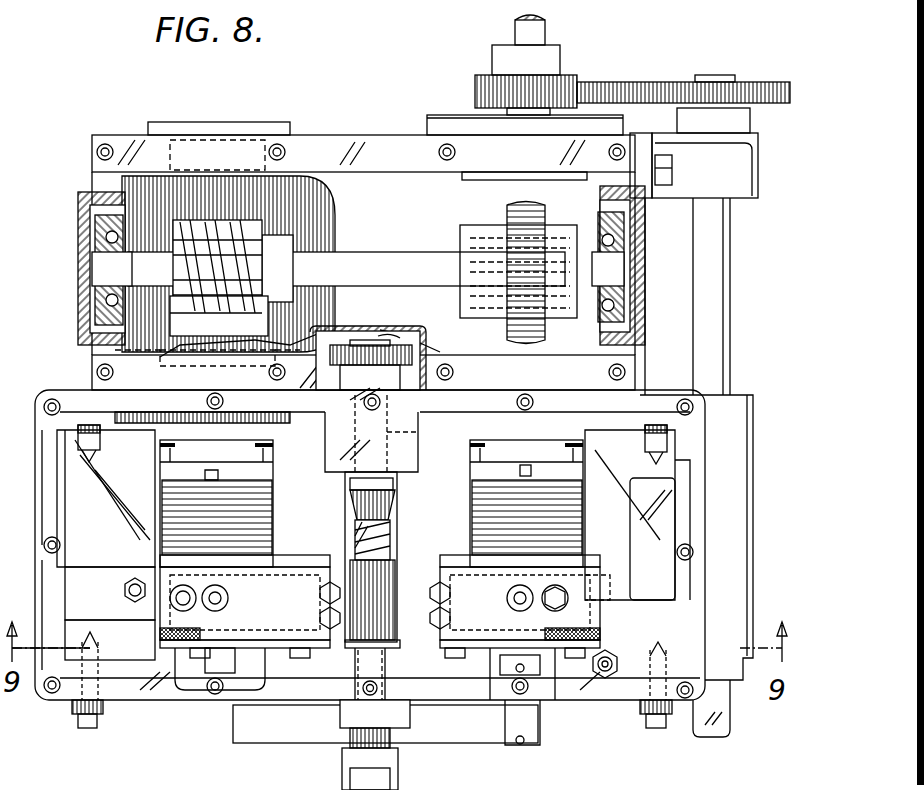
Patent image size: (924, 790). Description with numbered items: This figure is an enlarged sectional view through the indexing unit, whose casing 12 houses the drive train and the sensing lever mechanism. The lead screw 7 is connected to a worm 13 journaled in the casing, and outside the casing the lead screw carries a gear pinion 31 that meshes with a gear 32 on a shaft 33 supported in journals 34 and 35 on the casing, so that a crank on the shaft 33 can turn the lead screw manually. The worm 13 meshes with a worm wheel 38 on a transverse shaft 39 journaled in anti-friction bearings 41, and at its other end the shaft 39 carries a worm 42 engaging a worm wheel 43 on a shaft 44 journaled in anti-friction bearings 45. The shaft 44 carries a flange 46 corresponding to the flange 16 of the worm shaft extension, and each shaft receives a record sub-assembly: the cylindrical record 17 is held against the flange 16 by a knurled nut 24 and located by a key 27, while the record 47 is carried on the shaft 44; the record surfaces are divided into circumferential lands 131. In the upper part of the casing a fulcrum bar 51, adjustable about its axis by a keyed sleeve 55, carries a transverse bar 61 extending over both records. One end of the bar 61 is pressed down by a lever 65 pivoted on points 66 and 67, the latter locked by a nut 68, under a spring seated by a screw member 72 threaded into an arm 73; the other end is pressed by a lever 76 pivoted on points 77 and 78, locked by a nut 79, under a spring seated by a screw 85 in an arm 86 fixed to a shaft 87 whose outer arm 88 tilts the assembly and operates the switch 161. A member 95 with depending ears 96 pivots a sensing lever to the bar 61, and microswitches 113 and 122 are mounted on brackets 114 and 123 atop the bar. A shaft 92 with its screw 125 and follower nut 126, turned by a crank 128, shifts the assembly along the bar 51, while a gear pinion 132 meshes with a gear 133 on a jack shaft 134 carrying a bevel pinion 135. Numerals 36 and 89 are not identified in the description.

The lead screw 7 is at (514, 28).
The casing 12 is at (335, 138).
The worm 13 is at (572, 245).
The flange 16 is at (548, 470).
The cylindrical record 17 is at (490, 508).
The nut 24 is at (165, 632).
The key 27 is at (525, 464).
The gear pinion 31 is at (482, 86).
The gear 32 is at (628, 90).
The shaft 33 is at (722, 301).
The journal 34 is at (748, 160).
The journal 35 is at (745, 482).
The frame hook 36 is at (720, 722).
The worm wheel 38 is at (507, 212).
The transverse shaft 39 is at (372, 258).
The anti-friction bearings 41 is at (80, 240).
The worm 42 is at (228, 308).
The worm wheel 43 is at (262, 303).
The shaft 44 is at (232, 211).
The anti-friction bearings 45 is at (250, 138).
The flange 46 is at (262, 462).
The record 47 is at (255, 510).
The bar 51 is at (392, 508).
The sleeve 55 is at (338, 714).
The transverse bar 61 is at (612, 578).
The lever 65 is at (70, 493).
The point 66 is at (85, 437).
The point 67 is at (100, 662).
The nut 68 is at (72, 712).
The member 72 is at (132, 580).
The arm 73 is at (100, 610).
The lever 76 is at (614, 550).
The point 77 is at (655, 455).
The point 78 is at (668, 650).
The nut 79 is at (664, 720).
The screw 85 is at (608, 680).
The arm 86 is at (573, 672).
The shaft 87 is at (503, 718).
The arm 88 is at (458, 745).
The splined sleeve 89 is at (355, 752).
The shaft 92 is at (362, 681).
The member 95 is at (430, 634).
The depending ears 96 is at (312, 632).
The microswitch 113 is at (275, 603).
The bracket 114 is at (255, 566).
The microswitch 122 is at (455, 612).
The bracket 123 is at (482, 566).
The screw 125 is at (390, 525).
The follower nut 126 is at (376, 632).
The crank 128 is at (385, 775).
The circumferential lands 131 is at (172, 505).
The gear pinion 132 is at (400, 345).
The gear 133 is at (348, 347).
The jack shaft 134 is at (418, 432).
The bevel pinion 135 is at (352, 505).
The switch 161 is at (668, 535).